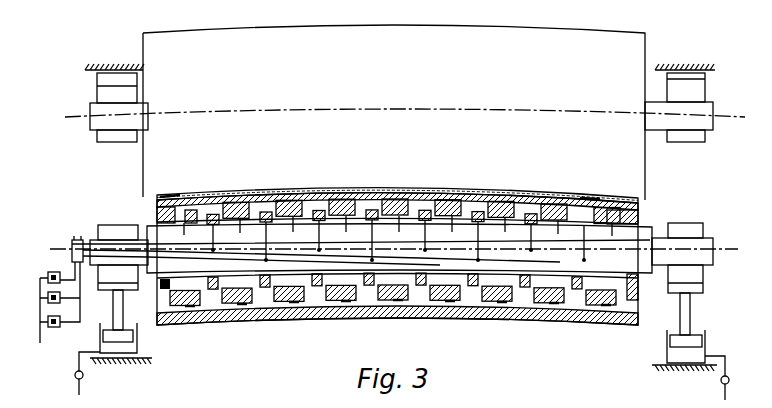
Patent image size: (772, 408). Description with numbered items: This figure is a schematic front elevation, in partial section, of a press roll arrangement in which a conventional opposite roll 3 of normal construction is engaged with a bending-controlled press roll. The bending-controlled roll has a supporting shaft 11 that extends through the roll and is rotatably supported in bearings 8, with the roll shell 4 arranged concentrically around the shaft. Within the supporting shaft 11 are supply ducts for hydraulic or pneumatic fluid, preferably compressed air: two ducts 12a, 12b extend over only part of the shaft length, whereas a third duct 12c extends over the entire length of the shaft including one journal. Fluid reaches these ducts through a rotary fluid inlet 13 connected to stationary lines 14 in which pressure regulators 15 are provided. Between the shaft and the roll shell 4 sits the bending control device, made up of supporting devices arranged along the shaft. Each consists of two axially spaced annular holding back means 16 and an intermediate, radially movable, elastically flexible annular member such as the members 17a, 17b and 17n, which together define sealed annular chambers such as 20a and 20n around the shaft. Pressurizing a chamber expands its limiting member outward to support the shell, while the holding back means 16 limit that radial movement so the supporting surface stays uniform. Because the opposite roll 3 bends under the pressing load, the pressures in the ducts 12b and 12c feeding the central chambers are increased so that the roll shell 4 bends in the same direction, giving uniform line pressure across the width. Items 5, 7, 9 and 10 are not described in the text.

The opposite roll 3 is at (466, 25).
The roll shell 4 is at (297, 320).
The roll shell 5 is at (640, 197).
The drum bearing 7 is at (106, 139).
The bearings 8 is at (108, 228).
The hydraulic cylinder 9 is at (136, 337).
The pressure supply / ground 10 is at (721, 381).
The supporting shaft 11 is at (350, 306).
The supply duct 12a is at (222, 265).
The supply duct 12b is at (437, 265).
The supply duct 12c is at (528, 256).
The rotary fluid inlet 13 is at (75, 240).
The stationary lines 14 is at (72, 270).
The pressure regulators 15 is at (48, 277).
The holding back means 16 is at (395, 192).
The annular chamber limiting member 17a is at (200, 204).
The annular chamber limiting member 17b is at (252, 201).
The annular chamber limiting member 17n is at (610, 203).
The annular chamber 20a is at (171, 196).
The annular chamber 20n is at (598, 198).